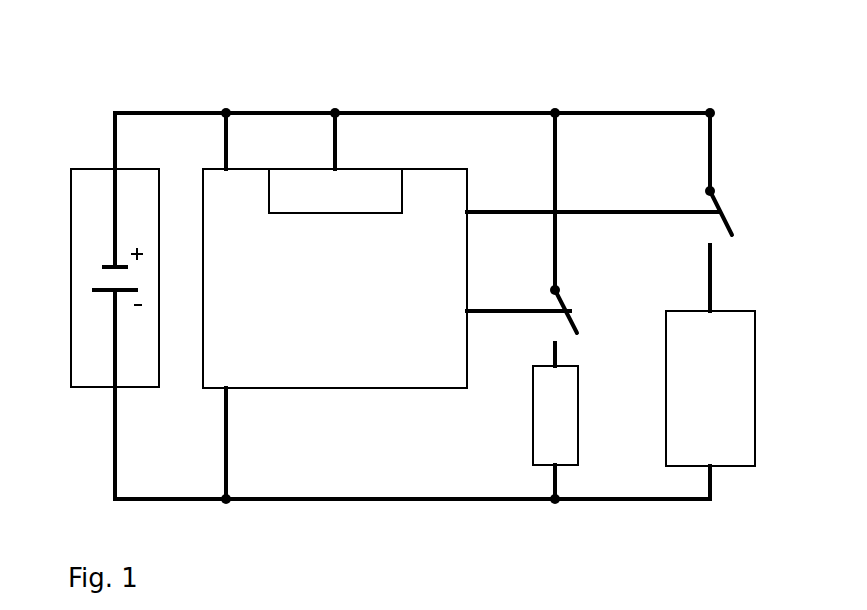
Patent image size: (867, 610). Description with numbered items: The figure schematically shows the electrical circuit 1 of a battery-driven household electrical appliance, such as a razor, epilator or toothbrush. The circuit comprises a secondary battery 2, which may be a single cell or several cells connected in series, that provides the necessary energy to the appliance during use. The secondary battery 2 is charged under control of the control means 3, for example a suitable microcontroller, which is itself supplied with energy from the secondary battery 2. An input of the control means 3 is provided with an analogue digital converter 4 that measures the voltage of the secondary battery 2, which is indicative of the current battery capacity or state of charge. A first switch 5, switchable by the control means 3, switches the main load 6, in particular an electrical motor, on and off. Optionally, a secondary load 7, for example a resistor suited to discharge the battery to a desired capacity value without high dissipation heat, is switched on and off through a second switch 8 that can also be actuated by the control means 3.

The electrical circuit 1 is at (716, 67).
The secondary battery 2 is at (89, 183).
The control means 3 is at (387, 363).
The analogue digital converter 4 is at (295, 197).
The first switch 5 is at (582, 299).
The main load 6 is at (718, 403).
The secondary load 7 is at (557, 425).
The second switch 8 is at (744, 197).